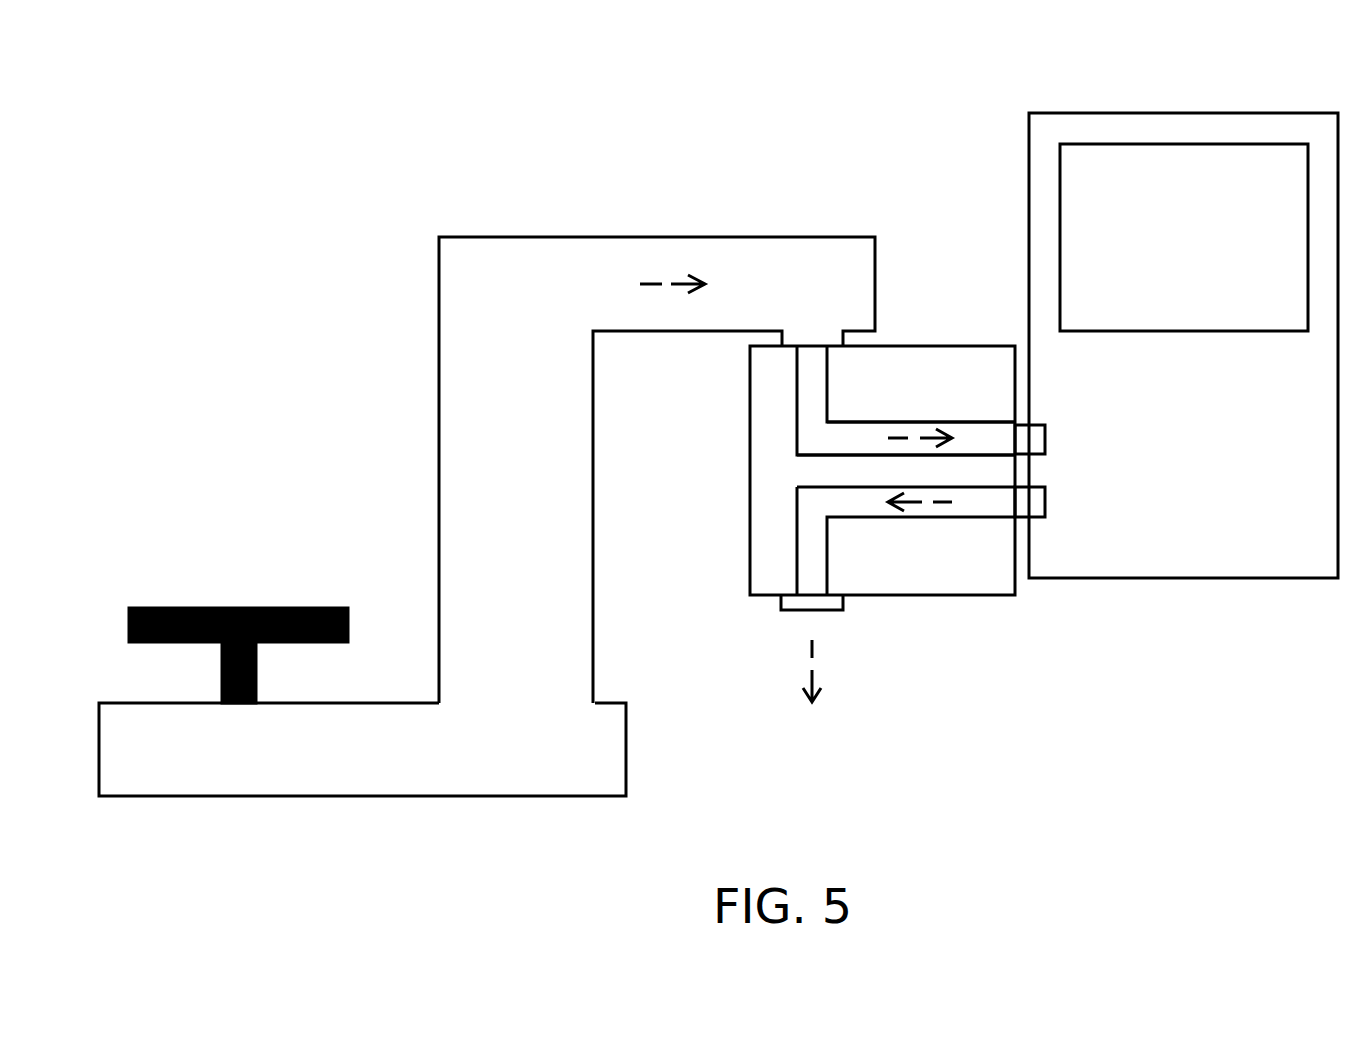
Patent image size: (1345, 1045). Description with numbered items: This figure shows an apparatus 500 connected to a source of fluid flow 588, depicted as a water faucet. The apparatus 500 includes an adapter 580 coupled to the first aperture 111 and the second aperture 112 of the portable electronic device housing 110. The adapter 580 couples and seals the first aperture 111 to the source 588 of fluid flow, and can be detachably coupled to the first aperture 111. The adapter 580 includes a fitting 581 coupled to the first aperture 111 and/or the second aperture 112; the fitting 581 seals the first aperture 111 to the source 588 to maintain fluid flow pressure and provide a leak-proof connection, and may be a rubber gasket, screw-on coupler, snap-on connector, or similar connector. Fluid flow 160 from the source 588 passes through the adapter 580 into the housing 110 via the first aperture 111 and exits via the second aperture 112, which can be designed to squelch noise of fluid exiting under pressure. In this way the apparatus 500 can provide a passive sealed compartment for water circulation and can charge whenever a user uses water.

The apparatus 500 is at (940, 115).
The source of fluid flow 588 is at (696, 237).
The adapter 580 is at (920, 597).
The fitting 581 is at (1012, 435).
The fluid flow 160 is at (905, 440).
The first aperture 111 is at (1073, 447).
The second aperture 112 is at (1073, 510).
The portable electronic device housing 110 is at (1137, 580).